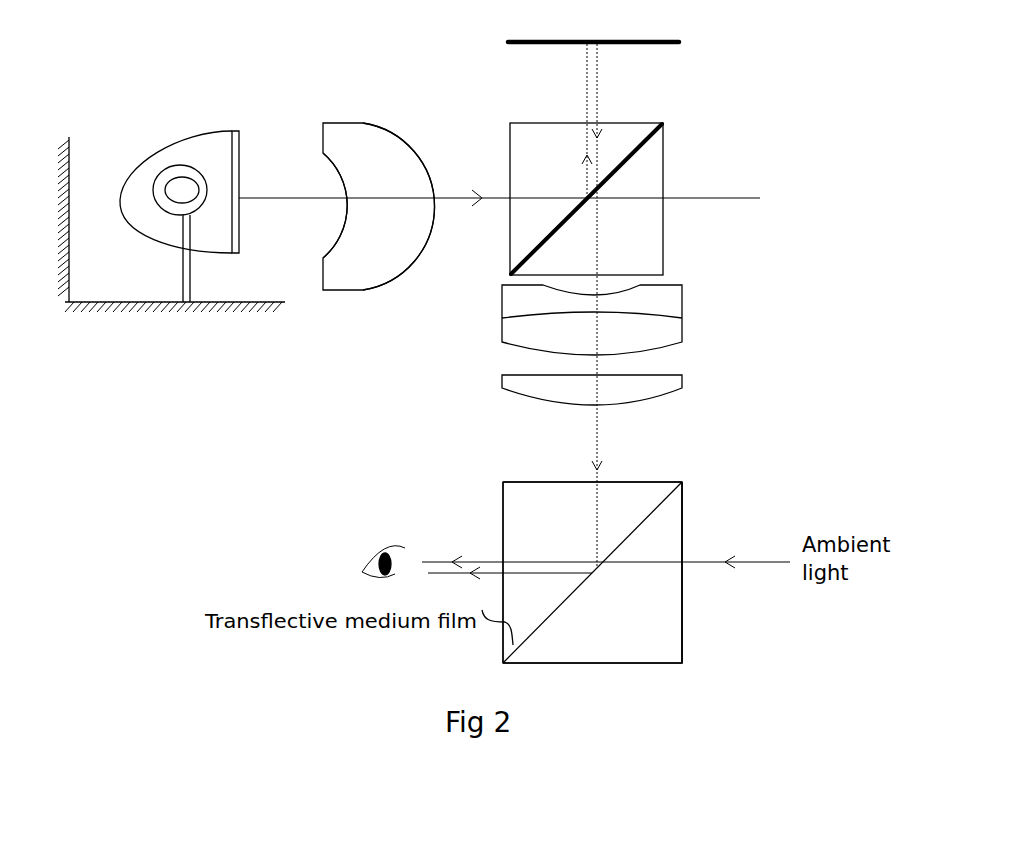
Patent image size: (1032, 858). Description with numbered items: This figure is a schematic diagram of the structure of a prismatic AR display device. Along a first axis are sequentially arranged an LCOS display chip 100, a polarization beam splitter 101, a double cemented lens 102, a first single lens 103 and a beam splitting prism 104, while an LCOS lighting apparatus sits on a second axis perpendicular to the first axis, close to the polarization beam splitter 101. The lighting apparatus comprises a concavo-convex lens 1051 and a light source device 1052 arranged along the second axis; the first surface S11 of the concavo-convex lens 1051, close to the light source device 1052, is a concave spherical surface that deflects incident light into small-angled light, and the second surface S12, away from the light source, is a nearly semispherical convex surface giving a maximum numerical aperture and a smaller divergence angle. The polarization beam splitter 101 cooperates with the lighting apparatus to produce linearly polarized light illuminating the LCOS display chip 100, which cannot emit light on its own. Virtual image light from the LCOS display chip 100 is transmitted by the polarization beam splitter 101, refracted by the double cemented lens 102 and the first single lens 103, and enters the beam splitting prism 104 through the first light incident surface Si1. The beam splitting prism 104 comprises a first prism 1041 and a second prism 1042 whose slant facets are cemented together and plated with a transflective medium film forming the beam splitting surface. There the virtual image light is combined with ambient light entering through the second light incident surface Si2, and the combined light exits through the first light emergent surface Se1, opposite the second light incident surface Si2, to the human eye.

The LCOS display chip 100 is at (535, 40).
The polarization beam splitter 101 is at (663, 123).
The double cemented lens 102 is at (672, 320).
The first single lens 103 is at (672, 388).
The beam splitting prism 104 is at (682, 482).
The first prism 1041 is at (645, 515).
The second prism 1042 is at (645, 643).
The concavo-convex lens 1051 is at (343, 122).
The light source device 1052 is at (190, 138).
The first surface S11 is at (343, 243).
The second surface S12 is at (388, 278).
The first light incident surface Si1 is at (515, 481).
The second light incident surface Si2 is at (682, 523).
The first light emergent surface Se1 is at (507, 543).